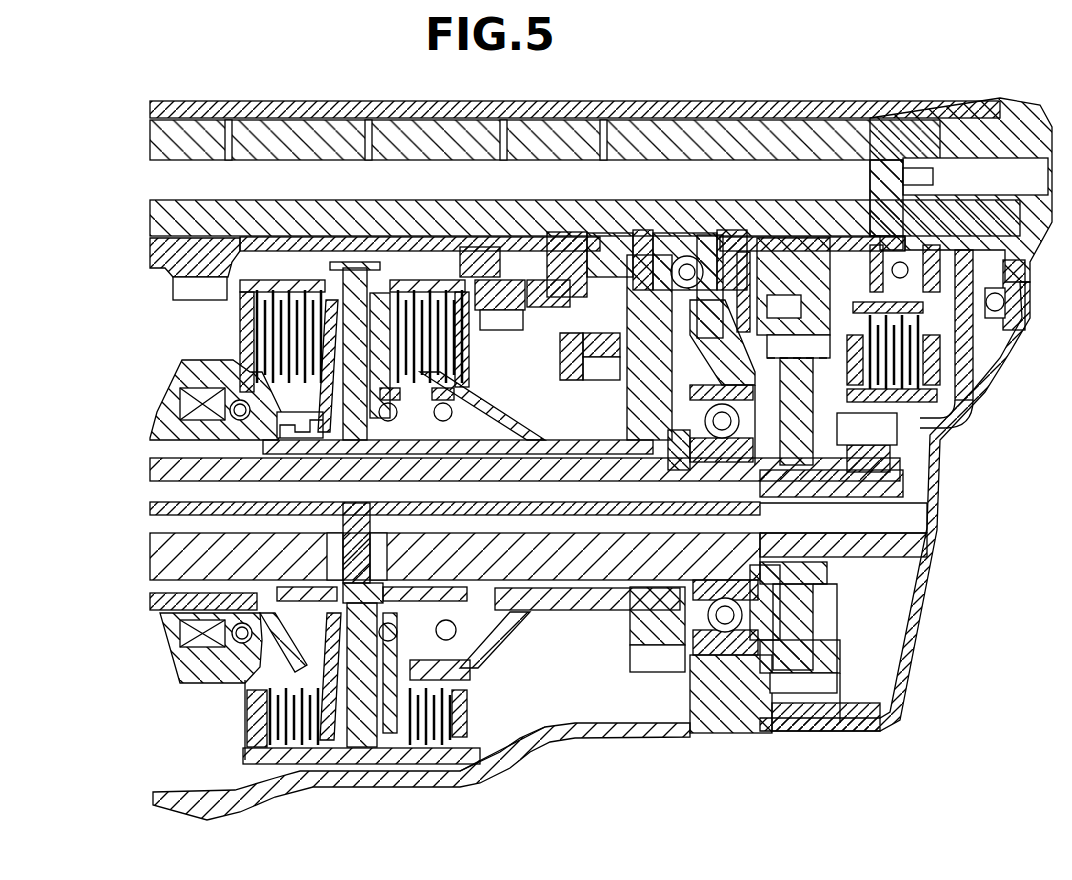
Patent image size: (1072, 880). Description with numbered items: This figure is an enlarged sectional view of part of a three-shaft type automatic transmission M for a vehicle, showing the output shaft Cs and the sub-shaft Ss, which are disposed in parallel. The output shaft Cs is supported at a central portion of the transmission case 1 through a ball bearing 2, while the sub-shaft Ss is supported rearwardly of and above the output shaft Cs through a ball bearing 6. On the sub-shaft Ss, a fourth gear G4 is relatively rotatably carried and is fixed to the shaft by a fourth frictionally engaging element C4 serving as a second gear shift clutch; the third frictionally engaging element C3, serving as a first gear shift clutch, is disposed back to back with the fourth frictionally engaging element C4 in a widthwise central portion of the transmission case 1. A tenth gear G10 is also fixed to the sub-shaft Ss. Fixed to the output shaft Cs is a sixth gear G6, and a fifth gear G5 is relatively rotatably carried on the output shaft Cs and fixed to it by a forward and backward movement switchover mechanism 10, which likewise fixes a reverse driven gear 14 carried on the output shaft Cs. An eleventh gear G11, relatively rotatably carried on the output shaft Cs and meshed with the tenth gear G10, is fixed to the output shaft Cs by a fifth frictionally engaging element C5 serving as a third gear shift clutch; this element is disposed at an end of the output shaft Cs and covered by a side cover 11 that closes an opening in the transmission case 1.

The transmission case 1 is at (670, 733).
The ball bearing 2 is at (690, 256).
The ball bearing 6 is at (752, 665).
The forward and backward movement switchover mechanism 10 is at (545, 300).
The side cover 11 is at (937, 530).
The reverse driven gear 14 is at (583, 376).
The automatic transmission M is at (575, 747).
The output shaft Cs is at (155, 230).
The sub-shaft Ss is at (157, 566).
The third frictionally engaging element C3 is at (310, 766).
The fourth frictionally engaging element C4 is at (432, 766).
The fifth frictionally engaging element C5 is at (927, 408).
The fourth gear G4 is at (633, 640).
The fifth gear G5 is at (502, 330).
The sixth gear G6 is at (190, 282).
The tenth gear G10 is at (897, 430).
The eleventh gear G11 is at (793, 286).